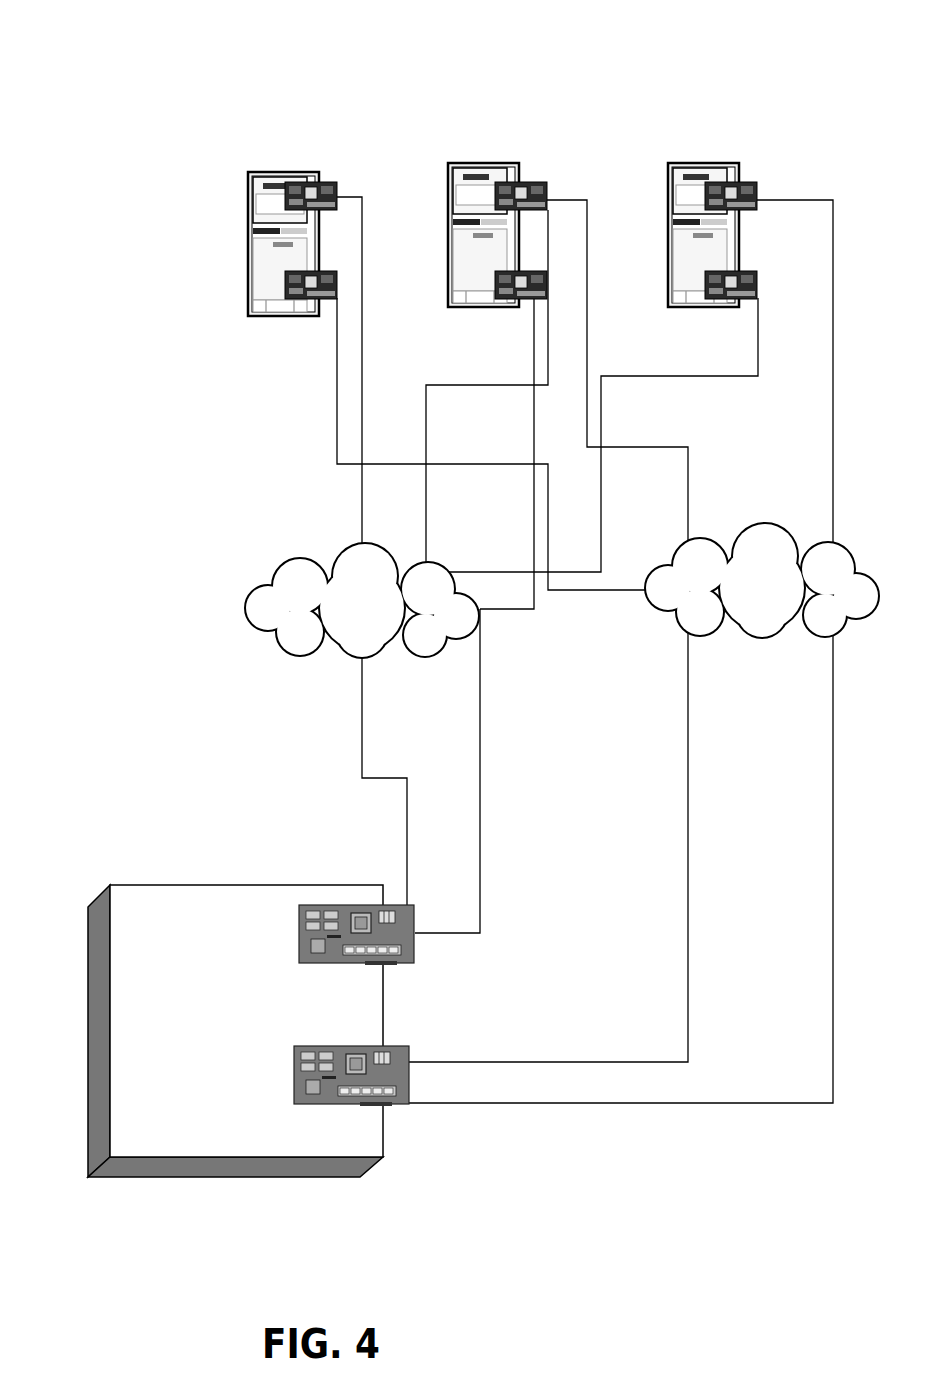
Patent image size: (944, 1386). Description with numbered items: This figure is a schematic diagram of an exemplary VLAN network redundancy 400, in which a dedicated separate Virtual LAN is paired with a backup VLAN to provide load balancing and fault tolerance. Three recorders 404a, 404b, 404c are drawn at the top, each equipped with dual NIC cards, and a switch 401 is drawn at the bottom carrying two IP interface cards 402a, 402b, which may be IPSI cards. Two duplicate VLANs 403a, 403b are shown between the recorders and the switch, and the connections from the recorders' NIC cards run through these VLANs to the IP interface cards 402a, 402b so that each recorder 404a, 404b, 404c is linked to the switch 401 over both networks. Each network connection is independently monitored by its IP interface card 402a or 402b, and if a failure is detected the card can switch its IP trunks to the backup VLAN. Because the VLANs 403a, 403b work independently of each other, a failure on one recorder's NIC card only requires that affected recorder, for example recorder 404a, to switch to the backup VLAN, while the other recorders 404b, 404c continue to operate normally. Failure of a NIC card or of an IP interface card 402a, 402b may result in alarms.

The VLAN network redundancy 400 is at (62, 38).
The switch 401 is at (270, 1034).
The IP interface card 402a is at (568, 1012).
The IP interface card 402b is at (533, 1161).
The VLAN 403a is at (395, 620).
The VLAN 403b is at (793, 600).
The recorder 404a is at (168, 156).
The recorder 404b is at (415, 126).
The recorder 404c is at (627, 146).